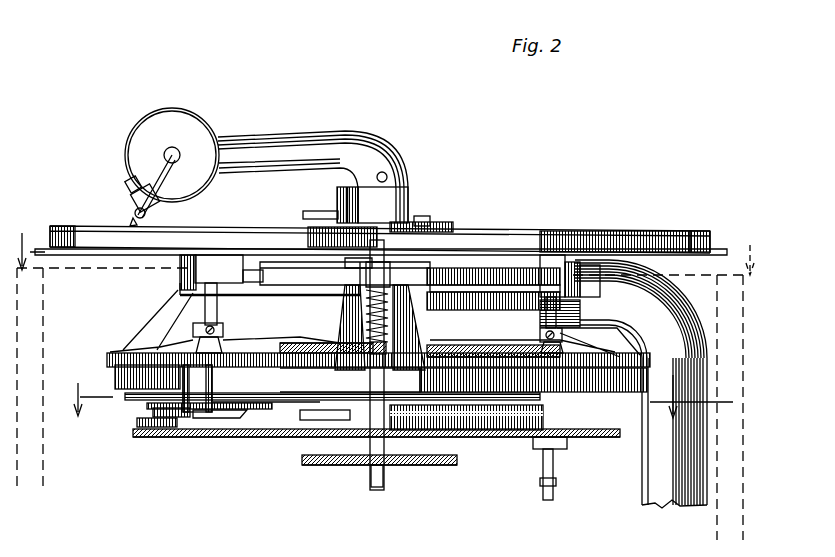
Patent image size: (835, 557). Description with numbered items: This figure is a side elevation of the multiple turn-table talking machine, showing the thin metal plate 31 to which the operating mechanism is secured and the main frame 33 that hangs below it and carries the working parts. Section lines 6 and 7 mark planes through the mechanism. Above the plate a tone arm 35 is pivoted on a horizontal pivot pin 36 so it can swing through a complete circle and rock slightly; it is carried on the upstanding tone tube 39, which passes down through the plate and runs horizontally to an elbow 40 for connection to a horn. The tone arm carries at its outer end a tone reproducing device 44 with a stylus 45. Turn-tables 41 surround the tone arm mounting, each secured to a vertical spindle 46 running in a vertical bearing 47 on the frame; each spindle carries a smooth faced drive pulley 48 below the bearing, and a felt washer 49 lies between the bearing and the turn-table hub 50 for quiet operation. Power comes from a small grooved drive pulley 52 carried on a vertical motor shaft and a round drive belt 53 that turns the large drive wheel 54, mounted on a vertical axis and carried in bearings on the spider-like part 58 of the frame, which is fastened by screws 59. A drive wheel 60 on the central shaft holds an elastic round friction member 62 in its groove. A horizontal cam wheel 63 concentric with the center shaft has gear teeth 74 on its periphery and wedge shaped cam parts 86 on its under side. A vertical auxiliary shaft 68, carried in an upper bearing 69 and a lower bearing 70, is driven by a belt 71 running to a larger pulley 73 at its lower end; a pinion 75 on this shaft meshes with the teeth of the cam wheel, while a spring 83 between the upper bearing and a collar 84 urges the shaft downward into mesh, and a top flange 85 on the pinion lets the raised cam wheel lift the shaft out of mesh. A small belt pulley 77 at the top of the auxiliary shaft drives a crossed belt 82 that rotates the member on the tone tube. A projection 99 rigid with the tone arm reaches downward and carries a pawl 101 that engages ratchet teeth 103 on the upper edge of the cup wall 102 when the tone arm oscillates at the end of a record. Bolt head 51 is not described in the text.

The section line 6- 6 is at (384, 254).
The section line 7- 7 is at (397, 396).
The thin metal plate 31 is at (91, 253).
The main frame 33 is at (283, 352).
The tone arm 35 is at (318, 132).
The horizontal pivot pin 36 is at (388, 176).
The tone tube 39 is at (480, 260).
The elbow 40 is at (688, 480).
The turn-table 41 is at (52, 226).
The tone reproducing device 44 is at (180, 109).
The stylus 45 is at (130, 221).
The spindle 46 is at (222, 313).
The vertical bearing 47 is at (180, 273).
The drive pulley 48 is at (110, 356).
The felt washer 49 is at (206, 255).
The hub 50 is at (222, 254).
The bolt head 51 is at (580, 443).
The drive pulley 52 is at (556, 486).
The round drive belt 53 is at (167, 438).
The drive wheel 54 is at (232, 437).
The spider-like part 58 is at (493, 437).
The screws 59 is at (160, 430).
The drive wheel 60 is at (445, 357).
The friction member 62 is at (470, 357).
The cam wheel 63 is at (265, 403).
The auxiliary shaft 68 is at (377, 488).
The upper bearing 69 is at (393, 278).
The lower bearing 70 is at (388, 379).
The belt 71 is at (420, 465).
The pulley 73 is at (343, 465).
The gear teeth 74 is at (124, 398).
The pinion 75 is at (354, 398).
The belt pulley 77 is at (350, 263).
The belt 82 is at (408, 255).
The spring 83 is at (343, 318).
The collar 84 is at (345, 333).
The top flange 85 is at (345, 430).
The wedge shaped cam parts 86 is at (310, 430).
The arm or projection 99 is at (337, 189).
The pawl 101 is at (303, 215).
The cup wall 102 is at (345, 273).
The ratchet teeth 103 is at (425, 222).